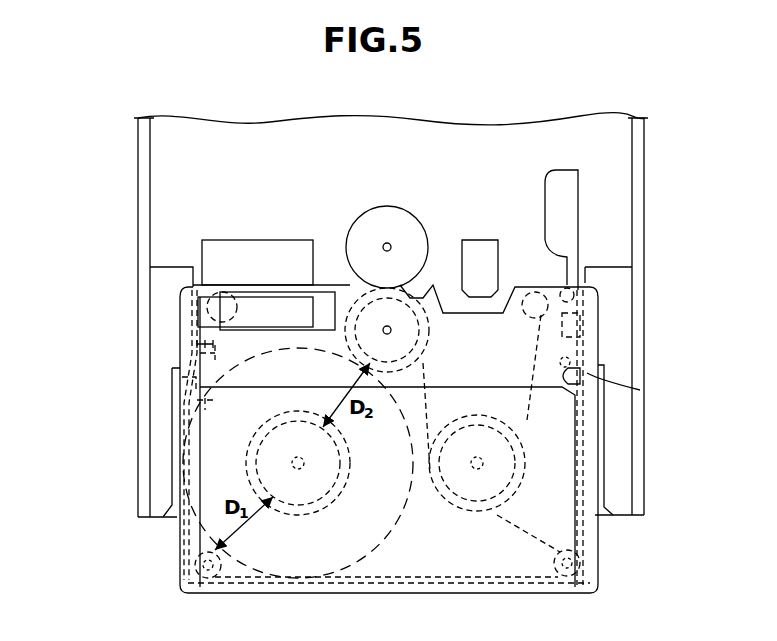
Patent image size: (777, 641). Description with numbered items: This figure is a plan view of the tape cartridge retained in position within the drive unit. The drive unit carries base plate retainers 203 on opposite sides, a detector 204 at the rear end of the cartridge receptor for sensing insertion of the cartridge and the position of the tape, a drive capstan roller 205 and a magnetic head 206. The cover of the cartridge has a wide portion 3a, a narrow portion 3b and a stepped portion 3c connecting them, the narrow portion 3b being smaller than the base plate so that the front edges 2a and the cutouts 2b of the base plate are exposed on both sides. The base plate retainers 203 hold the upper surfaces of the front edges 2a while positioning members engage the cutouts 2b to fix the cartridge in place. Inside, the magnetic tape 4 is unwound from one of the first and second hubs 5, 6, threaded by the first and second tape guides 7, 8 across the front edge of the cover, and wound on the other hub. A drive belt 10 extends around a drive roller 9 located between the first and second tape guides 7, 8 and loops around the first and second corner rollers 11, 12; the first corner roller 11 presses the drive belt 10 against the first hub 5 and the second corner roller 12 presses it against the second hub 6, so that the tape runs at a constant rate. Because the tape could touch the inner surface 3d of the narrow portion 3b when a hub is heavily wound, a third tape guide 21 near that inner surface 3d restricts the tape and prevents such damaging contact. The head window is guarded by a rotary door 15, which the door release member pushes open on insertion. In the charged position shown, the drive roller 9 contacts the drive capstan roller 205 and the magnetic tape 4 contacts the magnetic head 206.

The base plate retainers 203 is at (177, 267).
The rotary door 15 is at (570, 198).
The detector 204 is at (285, 252).
The drive capstan roller 205 is at (383, 215).
The magnetic head 206 is at (477, 248).
The front edges 2a is at (185, 297).
The cutouts 2b is at (185, 325).
The third tape guide 21 is at (202, 368).
The first tape guide 7 is at (218, 308).
The drive roller 9 is at (415, 297).
The magnetic tape 4 is at (507, 297).
The wide portion 3a is at (182, 432).
The narrow portion 3b is at (200, 353).
The stepped portion 3c is at (182, 377).
The inner surface 3d is at (590, 380).
The second tape guide 8 is at (580, 353).
The first hub 5 is at (247, 458).
The second hub 6 is at (493, 490).
The drive belt 10 is at (230, 560).
The first corner roller 11 is at (210, 578).
The second corner roller 12 is at (573, 563).